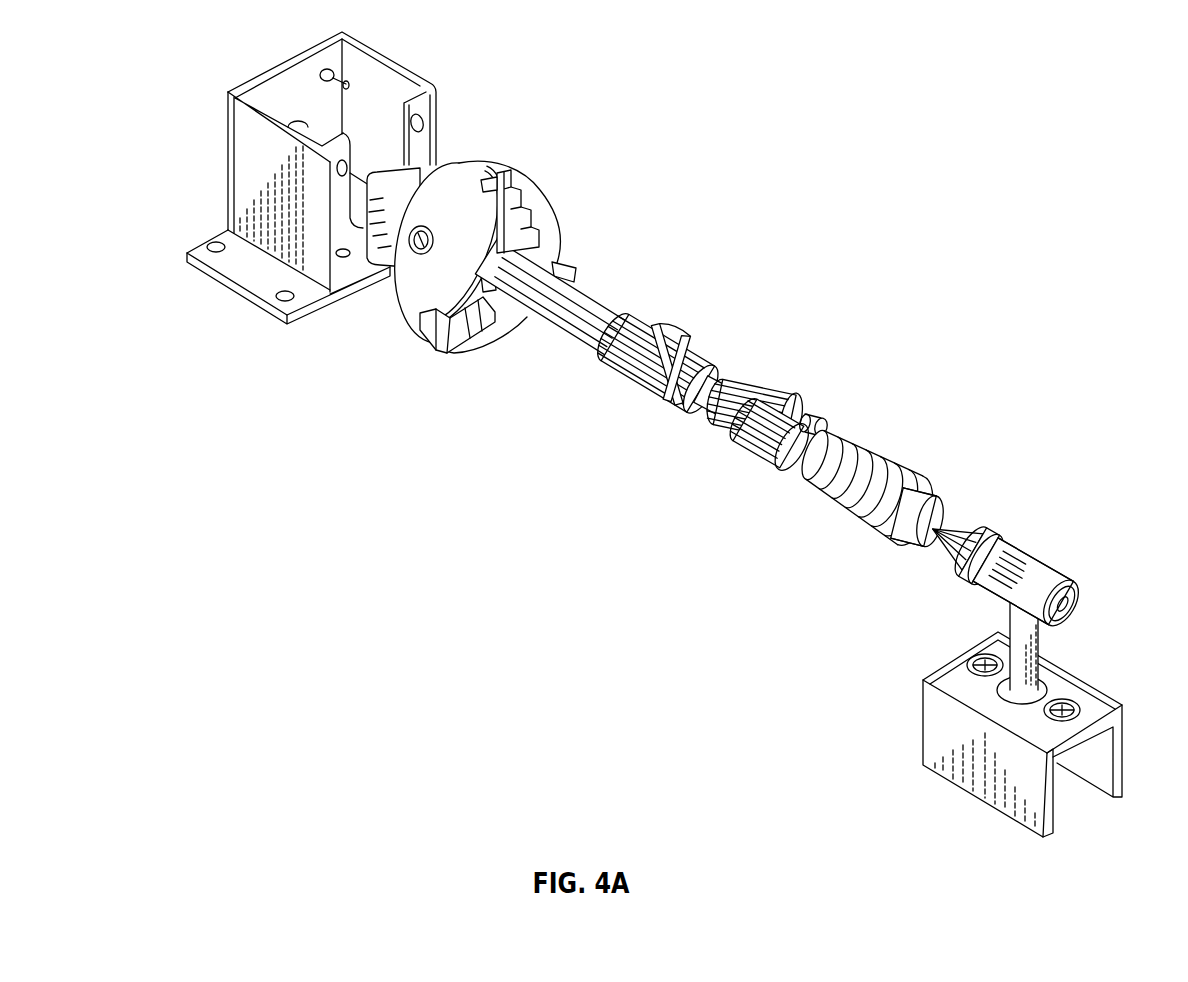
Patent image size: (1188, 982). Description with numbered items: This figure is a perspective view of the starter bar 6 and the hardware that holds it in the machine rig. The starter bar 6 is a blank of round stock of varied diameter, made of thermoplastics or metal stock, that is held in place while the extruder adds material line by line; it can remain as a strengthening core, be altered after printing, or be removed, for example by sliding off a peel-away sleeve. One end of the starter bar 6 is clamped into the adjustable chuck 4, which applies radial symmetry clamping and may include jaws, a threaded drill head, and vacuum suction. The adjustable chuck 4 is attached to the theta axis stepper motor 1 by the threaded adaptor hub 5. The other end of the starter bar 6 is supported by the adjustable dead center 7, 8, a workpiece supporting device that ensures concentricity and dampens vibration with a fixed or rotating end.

The theta axis stepper motor 1 is at (250, 137).
The adjustable chuck 4 is at (437, 162).
The threaded adaptor hub 5 is at (360, 211).
The starter bar 6 is at (819, 319).
The dead center 7 is at (968, 526).
The dead center 8 is at (1032, 557).